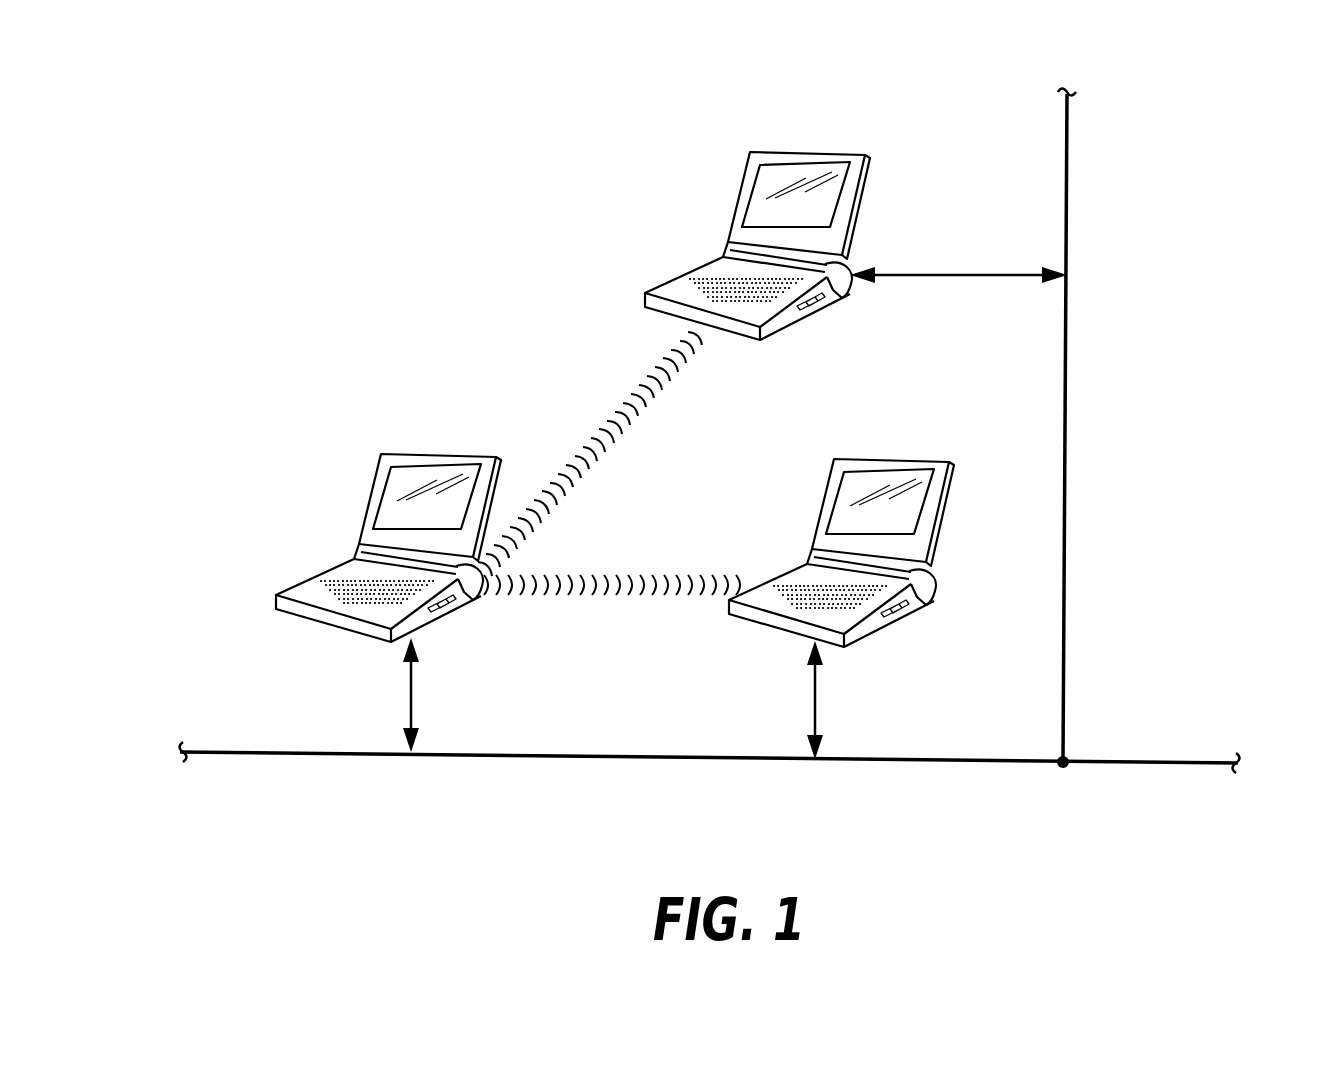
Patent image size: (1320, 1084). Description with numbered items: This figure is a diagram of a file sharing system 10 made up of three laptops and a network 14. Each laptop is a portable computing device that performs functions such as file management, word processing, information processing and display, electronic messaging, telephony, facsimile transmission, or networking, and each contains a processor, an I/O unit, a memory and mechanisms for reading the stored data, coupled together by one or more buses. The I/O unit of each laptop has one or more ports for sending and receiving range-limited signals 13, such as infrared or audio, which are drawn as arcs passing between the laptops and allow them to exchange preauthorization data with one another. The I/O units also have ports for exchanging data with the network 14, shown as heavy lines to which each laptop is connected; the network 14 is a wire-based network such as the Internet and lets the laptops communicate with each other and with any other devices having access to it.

The file sharing system 10 is at (365, 248).
The range-limited signals 13 is at (608, 577).
The network 14 is at (1069, 212).